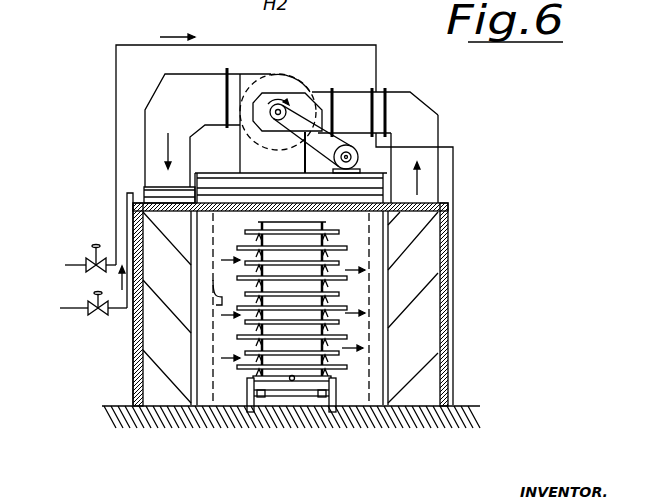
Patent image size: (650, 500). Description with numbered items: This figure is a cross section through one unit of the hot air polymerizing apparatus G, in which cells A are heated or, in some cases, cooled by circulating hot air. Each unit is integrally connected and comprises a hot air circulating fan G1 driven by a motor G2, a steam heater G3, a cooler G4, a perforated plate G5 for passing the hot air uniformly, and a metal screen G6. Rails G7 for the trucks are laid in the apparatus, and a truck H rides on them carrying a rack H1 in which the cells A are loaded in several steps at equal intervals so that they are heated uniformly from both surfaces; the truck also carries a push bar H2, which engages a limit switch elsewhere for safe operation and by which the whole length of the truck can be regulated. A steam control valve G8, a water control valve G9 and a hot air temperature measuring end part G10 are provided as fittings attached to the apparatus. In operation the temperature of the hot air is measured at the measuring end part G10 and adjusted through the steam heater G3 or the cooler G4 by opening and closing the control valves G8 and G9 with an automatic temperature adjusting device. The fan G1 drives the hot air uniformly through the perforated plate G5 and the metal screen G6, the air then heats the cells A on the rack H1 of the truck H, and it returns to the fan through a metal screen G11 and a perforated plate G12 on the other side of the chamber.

The hot air polymerizing apparatus G is at (423, 205).
The hot air circulating fan G1 is at (285, 82).
The motor G2 is at (352, 150).
The steam heater G3 is at (150, 190).
The cooler G4 is at (380, 128).
The perforated plate G5 is at (214, 322).
The metal screen G6 is at (214, 342).
The rails G7 is at (334, 410).
The steam control valve G8 is at (95, 293).
The water control valve G9 is at (92, 246).
The hot air temperature measuring end part G10 is at (210, 212).
The metal screen G11 is at (371, 275).
The perforated plate G12 is at (390, 238).
The cells A is at (338, 322).
The truck H is at (310, 381).
The rack H1 is at (243, 370).
The push bar H2 is at (292, 381).